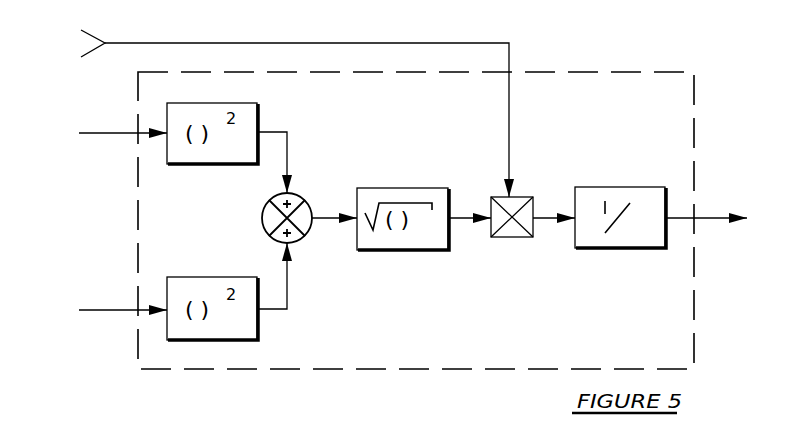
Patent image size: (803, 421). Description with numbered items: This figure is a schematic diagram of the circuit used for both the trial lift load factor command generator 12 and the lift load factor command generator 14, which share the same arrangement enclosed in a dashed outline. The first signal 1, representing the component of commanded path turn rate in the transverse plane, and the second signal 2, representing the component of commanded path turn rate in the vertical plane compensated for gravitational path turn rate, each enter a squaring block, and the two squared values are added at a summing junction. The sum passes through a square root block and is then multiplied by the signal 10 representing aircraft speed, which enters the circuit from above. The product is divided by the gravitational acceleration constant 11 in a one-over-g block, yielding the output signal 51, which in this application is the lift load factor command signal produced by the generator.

The aircraft speed signal 10 is at (269, 110).
The first signal 1 is at (97, 133).
The second signal 2 is at (97, 310).
The output signal 51 is at (726, 218).
The trial lift load factor command generator 12 is at (416, 191).
The lift load factor command generator 14 is at (416, 220).
The gravitational acceleration constant 11 is at (620, 232).